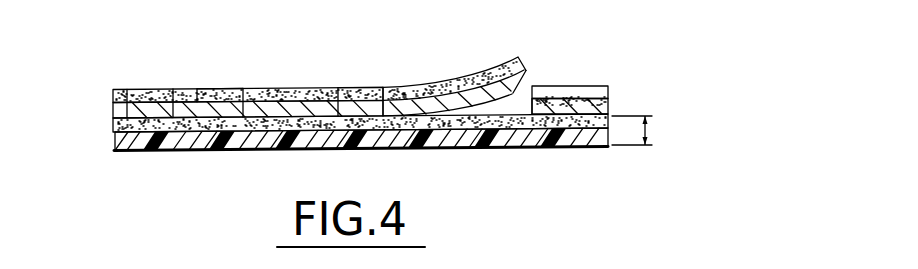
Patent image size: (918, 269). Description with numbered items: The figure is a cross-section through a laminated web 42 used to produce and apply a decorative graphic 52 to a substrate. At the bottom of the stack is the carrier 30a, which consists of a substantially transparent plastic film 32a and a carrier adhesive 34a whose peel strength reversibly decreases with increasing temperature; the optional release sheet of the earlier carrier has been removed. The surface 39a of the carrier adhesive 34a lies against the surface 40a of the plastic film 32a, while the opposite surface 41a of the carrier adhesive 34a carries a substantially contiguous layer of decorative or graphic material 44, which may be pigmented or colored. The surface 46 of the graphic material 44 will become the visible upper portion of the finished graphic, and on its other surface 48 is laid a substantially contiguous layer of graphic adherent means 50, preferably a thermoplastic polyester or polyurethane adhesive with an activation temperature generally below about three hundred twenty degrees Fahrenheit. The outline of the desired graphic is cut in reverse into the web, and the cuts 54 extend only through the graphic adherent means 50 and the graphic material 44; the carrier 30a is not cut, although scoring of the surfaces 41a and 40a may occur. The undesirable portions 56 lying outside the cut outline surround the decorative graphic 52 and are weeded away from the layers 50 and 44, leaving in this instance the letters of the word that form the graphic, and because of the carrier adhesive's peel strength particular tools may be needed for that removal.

The graphic adherent means 50 is at (146, 92).
The decorative graphic 52 is at (215, 88).
The cuts 54 is at (243, 100).
The undesirable portions 56 is at (182, 90).
The surface of graphic material 48 is at (477, 93).
The surface of graphic material 46 is at (527, 80).
The laminated web 42 is at (611, 79).
The graphic material 44 is at (605, 109).
The carrier 30a is at (648, 128).
The plastic film 32a is at (118, 146).
The carrier adhesive 34a is at (110, 131).
The surface of carrier adhesive 39a is at (378, 148).
The surface of carrier adhesive 41a is at (499, 122).
The surface of plastic film 40a is at (537, 130).